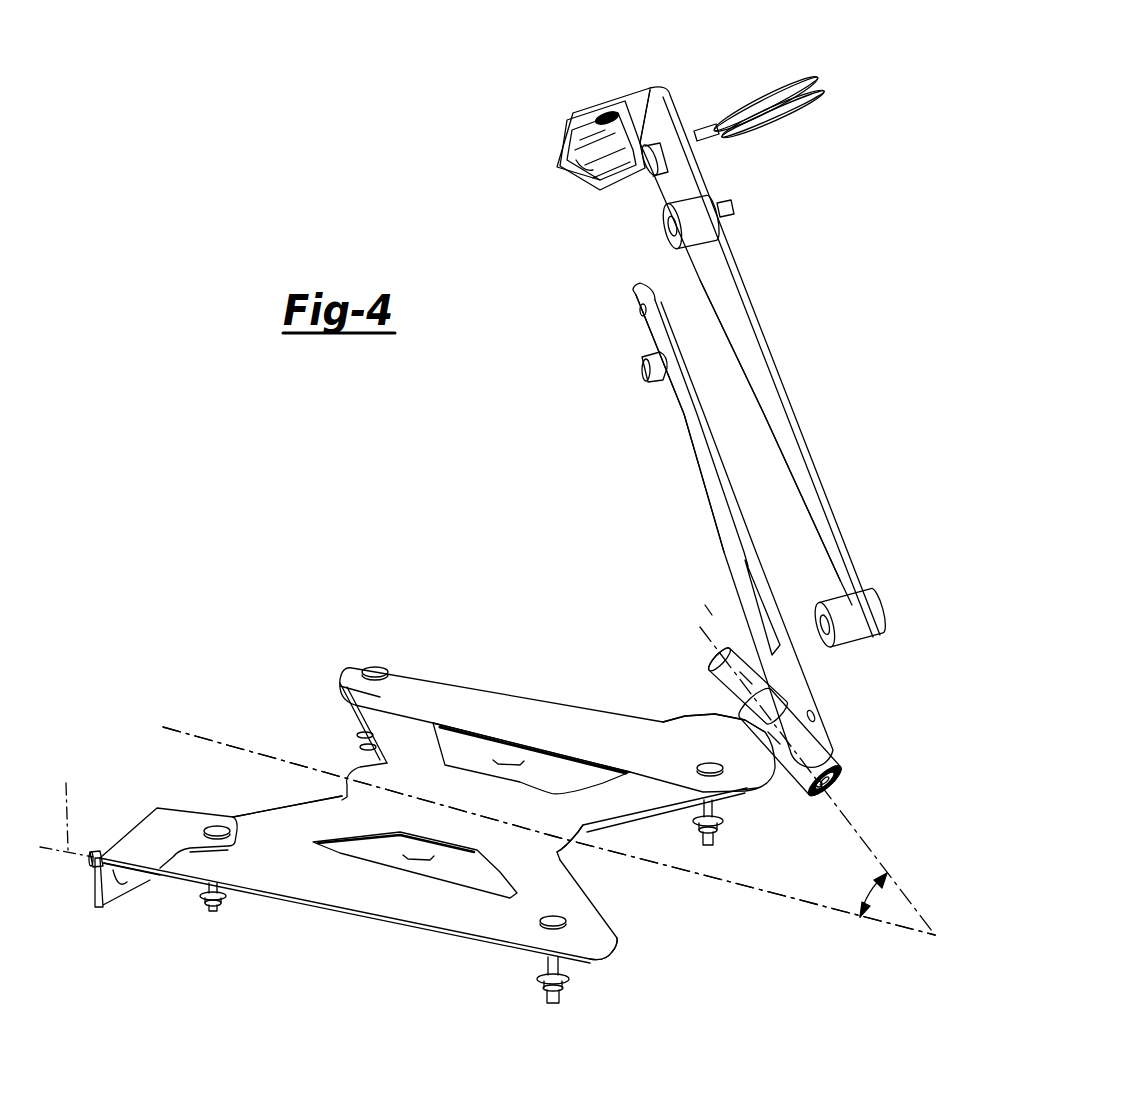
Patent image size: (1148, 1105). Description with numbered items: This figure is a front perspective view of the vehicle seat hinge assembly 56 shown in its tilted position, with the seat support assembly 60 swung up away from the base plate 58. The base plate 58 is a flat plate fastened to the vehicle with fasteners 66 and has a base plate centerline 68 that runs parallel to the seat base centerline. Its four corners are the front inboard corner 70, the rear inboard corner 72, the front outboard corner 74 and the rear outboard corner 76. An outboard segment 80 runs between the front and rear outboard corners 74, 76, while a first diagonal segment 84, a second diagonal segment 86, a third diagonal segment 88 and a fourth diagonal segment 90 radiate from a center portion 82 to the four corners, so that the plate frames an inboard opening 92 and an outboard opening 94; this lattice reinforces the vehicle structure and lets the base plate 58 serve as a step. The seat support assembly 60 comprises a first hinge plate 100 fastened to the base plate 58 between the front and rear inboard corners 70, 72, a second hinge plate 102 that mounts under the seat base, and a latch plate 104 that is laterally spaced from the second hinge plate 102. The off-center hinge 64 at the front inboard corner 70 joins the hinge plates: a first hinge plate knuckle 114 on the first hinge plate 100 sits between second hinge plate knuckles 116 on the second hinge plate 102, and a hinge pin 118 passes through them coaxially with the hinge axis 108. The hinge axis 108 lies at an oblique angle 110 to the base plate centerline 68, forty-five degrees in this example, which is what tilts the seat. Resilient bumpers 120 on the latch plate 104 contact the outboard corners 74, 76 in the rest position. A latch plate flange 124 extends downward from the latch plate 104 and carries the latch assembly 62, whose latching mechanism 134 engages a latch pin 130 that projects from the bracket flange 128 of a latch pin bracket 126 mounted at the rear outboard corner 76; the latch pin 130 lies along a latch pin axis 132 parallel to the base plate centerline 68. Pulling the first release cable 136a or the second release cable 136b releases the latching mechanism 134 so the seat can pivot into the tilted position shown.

The vehicle seat hinge assembly 56 is at (489, 536).
The base plate 58 is at (407, 794).
The seat support assembly 60 is at (820, 302).
The latch assembly 62 is at (572, 178).
The off-center hinge 64 is at (753, 704).
The fasteners 66 is at (375, 667).
The base plate centerline 68 is at (212, 738).
The front inboard corner 70 is at (752, 787).
The rear inboard corner 72 is at (360, 707).
The front outboard corner 74 is at (618, 942).
The rear outboard corner 76 is at (178, 868).
The outboard segment 80 is at (353, 897).
The center portion 82 is at (468, 798).
The first diagonal segment 84 is at (613, 812).
The second diagonal segment 86 is at (407, 737).
The third diagonal segment 88 is at (563, 877).
The fourth diagonal segment 90 is at (313, 828).
The inboard opening 92 is at (512, 760).
The outboard opening 94 is at (420, 845).
The first hinge plate 100 is at (475, 693).
The second hinge plate 102 is at (705, 479).
The latch plate 104 is at (768, 402).
The hinge axis 108 is at (880, 860).
The oblique angle 110 is at (867, 882).
The first hinge plate knuckle 114 is at (763, 722).
The second hinge plate knuckles 116 is at (718, 677).
The hinge pin 118 is at (838, 787).
The bumpers 120 is at (700, 243).
The latch plate flange 124 is at (645, 113).
The latch pin bracket 126 is at (160, 828).
The bracket flange 128 is at (120, 887).
The latch pin 130 is at (93, 852).
The latch pin axis 132 is at (66, 804).
The latching mechanism 134 is at (575, 165).
The first release cable 136a is at (827, 90).
The second release cable 136b is at (814, 75).